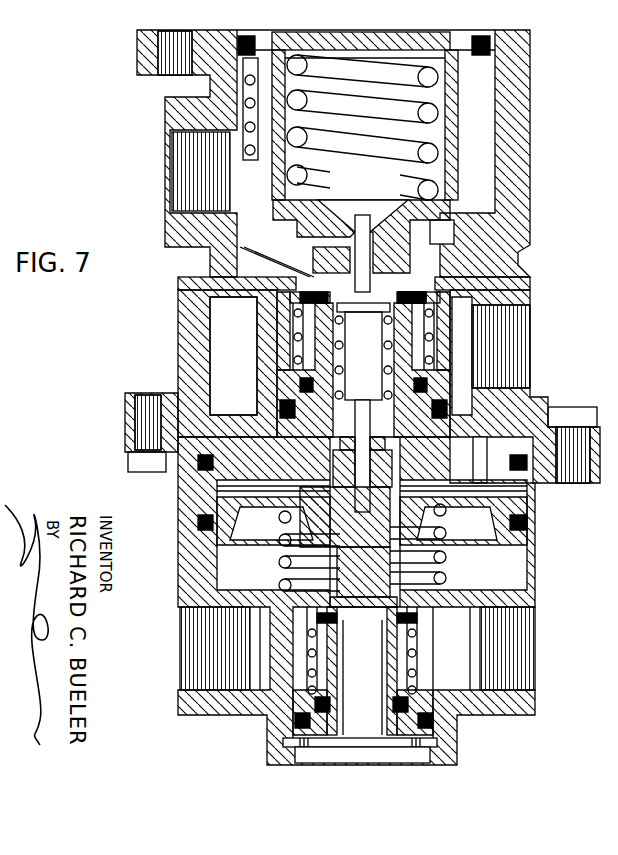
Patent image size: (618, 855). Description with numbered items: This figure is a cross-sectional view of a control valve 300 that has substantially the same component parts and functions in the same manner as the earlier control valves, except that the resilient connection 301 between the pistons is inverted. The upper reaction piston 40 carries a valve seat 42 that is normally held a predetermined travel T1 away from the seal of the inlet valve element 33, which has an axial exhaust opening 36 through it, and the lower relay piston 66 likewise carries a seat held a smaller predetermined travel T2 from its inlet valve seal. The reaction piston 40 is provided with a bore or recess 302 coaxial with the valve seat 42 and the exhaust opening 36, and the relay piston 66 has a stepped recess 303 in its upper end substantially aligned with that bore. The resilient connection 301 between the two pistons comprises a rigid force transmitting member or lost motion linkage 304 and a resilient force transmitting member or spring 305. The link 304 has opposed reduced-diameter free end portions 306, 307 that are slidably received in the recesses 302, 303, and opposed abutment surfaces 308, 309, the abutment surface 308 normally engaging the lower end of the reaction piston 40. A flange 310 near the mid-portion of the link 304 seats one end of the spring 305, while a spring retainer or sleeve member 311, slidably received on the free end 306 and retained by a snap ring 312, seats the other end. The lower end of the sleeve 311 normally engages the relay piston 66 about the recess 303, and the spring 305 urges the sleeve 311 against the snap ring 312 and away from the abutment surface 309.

The control valve 300 is at (130, 48).
The reaction piston 40 is at (275, 186).
The linkage free end portion 306 is at (366, 247).
The valve seat 42 is at (300, 252).
The abutment surface 308 is at (311, 278).
The reaction piston bore or recess 302 is at (372, 246).
The exhaust opening 36 is at (398, 303).
The inlet valve element 33 is at (318, 324).
The resilient connection 301 is at (290, 347).
The flange 310 is at (407, 318).
The rigid force transmitting member or lost motion linkage 304 is at (368, 353).
The resilient force transmitting member or spring 305 is at (388, 357).
The abutment surface 309 is at (343, 403).
The spring retainer or sleeve member 311 is at (337, 445).
The snap ring 312 is at (338, 460).
The relay piston stepped bore or recess 303 is at (382, 482).
The linkage free end portion 307 is at (362, 513).
The relay piston 66 is at (371, 569).
The travel T1 is at (143, 270).
The travel T2 is at (141, 594).